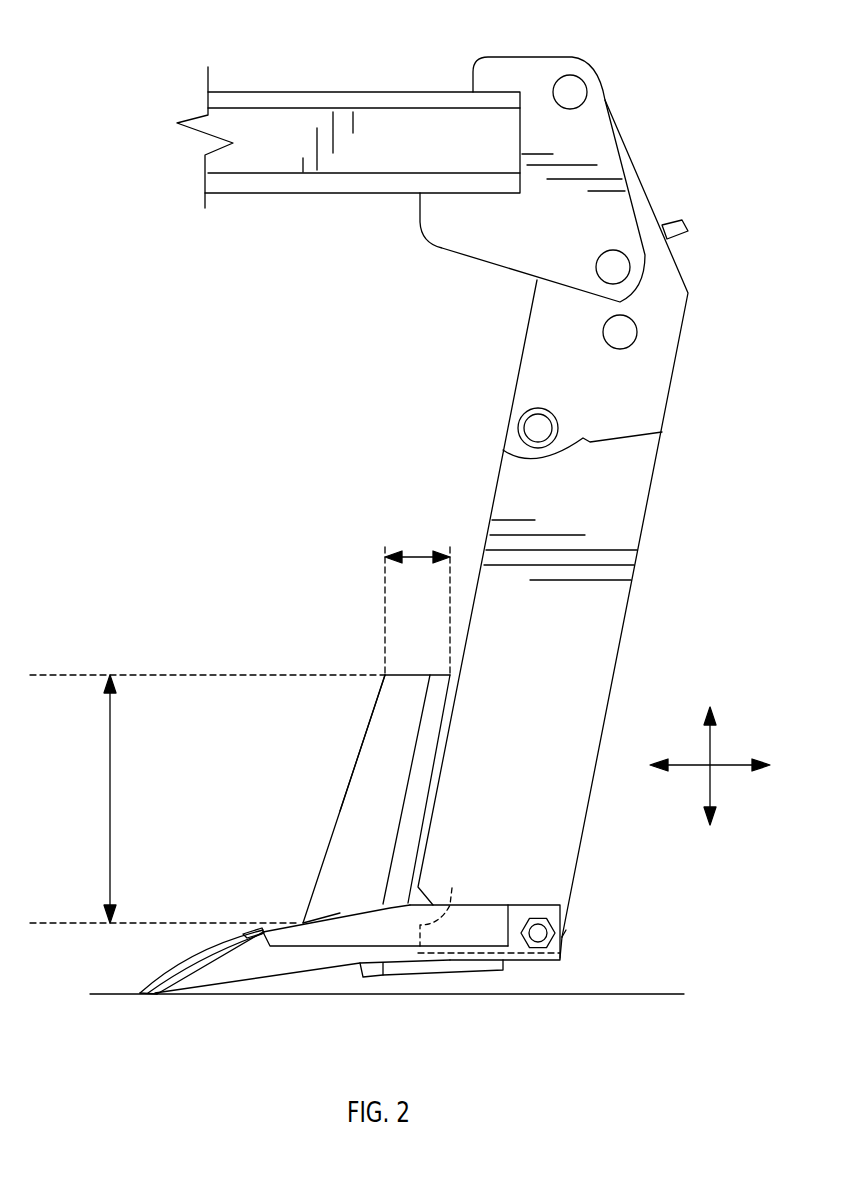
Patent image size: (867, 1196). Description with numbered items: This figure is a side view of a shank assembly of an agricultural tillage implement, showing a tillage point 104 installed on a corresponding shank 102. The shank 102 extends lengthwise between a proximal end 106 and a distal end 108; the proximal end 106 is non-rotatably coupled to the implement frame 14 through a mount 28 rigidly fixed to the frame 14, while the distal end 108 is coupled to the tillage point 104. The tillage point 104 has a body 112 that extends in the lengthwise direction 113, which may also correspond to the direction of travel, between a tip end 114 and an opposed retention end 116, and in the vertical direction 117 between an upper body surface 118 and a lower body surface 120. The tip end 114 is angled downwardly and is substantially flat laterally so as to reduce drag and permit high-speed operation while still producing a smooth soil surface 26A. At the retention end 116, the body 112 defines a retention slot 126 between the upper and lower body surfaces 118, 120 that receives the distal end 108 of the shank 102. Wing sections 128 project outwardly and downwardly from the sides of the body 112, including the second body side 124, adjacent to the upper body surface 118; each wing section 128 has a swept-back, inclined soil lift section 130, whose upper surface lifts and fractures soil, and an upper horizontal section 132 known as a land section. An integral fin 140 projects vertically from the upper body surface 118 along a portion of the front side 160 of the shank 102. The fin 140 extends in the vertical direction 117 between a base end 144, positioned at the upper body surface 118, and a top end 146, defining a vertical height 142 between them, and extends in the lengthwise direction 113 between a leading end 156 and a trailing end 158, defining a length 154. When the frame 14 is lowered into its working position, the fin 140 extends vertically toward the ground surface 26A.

The implement frame 14 is at (438, 127).
The mount 28 is at (620, 217).
The proximal end 106 is at (527, 320).
The front side 160 is at (503, 460).
The shank 102 is at (626, 485).
The length 154 is at (420, 553).
The top end 146 is at (405, 675).
The vertical height 142 is at (110, 812).
The fin 140 is at (358, 832).
The leading end 156 is at (360, 748).
The trailing end 158 is at (440, 745).
The base end 144 is at (303, 920).
The vertical direction 117 is at (712, 742).
The lengthwise direction 113 is at (728, 770).
The upper body surface 118 is at (178, 960).
The tip end 114 is at (130, 995).
The second body side 124 is at (212, 978).
The tillage point 104 is at (260, 970).
The body 112 is at (318, 962).
The lower body surface 120 is at (352, 967).
The soil lift section 130 is at (387, 945).
The wing section 128 is at (482, 932).
The retention slot 126 is at (445, 902).
The horizontal section 132 is at (483, 905).
The distal end 108 is at (565, 935).
The retention end 116 is at (563, 938).
The soil surface 26A is at (657, 997).